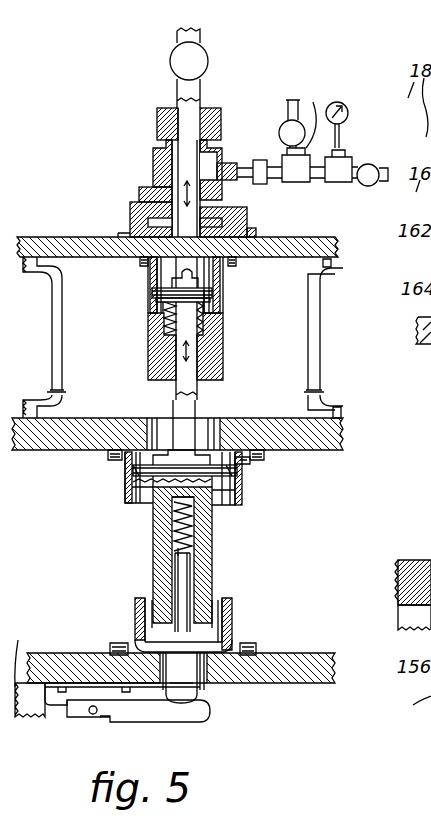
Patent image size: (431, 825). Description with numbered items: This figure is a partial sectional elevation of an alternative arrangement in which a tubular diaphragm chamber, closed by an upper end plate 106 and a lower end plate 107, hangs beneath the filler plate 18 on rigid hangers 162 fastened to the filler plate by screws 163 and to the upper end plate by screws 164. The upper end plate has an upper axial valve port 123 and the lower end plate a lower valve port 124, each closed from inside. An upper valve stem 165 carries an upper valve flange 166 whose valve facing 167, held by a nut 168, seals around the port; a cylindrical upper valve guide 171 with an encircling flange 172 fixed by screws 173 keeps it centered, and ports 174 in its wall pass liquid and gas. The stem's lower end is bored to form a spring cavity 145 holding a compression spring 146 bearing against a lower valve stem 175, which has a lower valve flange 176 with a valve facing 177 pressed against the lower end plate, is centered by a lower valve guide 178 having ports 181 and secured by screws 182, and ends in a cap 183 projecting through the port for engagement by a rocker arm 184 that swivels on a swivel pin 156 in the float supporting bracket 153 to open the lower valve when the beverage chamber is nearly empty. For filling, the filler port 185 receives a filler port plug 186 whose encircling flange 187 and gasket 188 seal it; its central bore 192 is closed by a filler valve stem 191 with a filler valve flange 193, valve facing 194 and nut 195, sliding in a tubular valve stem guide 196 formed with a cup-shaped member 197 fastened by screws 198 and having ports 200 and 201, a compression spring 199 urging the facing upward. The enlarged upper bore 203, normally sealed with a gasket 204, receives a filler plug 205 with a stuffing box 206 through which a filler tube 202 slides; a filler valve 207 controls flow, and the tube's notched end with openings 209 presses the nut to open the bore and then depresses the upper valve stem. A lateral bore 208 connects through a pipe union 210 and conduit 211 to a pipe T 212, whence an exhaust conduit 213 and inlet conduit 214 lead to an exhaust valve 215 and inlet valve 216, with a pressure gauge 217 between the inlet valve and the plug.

The filler plate 18 is at (333, 241).
The upper end plate 106 is at (338, 440).
The lower end plate 107 is at (316, 684).
The upper axial valve port 123 is at (204, 422).
The lower valve port 124 is at (205, 688).
The spring cavity 145 is at (193, 535).
The compression spring 146 is at (176, 543).
The float supporting bracket 153 is at (398, 612).
The swivel pin 156 is at (90, 719).
The rigid hangers 162 is at (316, 312).
The screws 163 is at (334, 267).
The screws 164 is at (338, 410).
The upper valve stem 165 is at (212, 525).
The upper valve flange 166 is at (155, 483).
The valve facing 167 is at (150, 476).
The nut 168 is at (160, 462).
The upper valve guide 171 is at (242, 499).
The encircling flange 172 is at (259, 455).
The screws 173 is at (118, 458).
The ports 174 is at (244, 474).
The lower valve stem 175 is at (183, 578).
The lower valve flange 176 is at (234, 678).
The valve facing 177 is at (222, 684).
The lower valve guide 178 is at (232, 601).
The ports 181 is at (140, 640).
The screws 182 is at (250, 647).
The cap 183 is at (180, 695).
The rocker arm 184 is at (120, 716).
The filler port 185 is at (237, 256).
The filler port plug 186 is at (247, 209).
The encircling flange 187 is at (258, 231).
The gasket 188 is at (119, 235).
The filler valve stem 191 is at (198, 384).
The central bore 192 is at (170, 233).
The filler valve flange 193 is at (170, 302).
The valve facing 194 is at (176, 297).
The nut 195 is at (170, 288).
The tubular valve stem guide 196 is at (218, 361).
The cup-shaped member 197 is at (226, 291).
The screws 198 is at (149, 268).
The compression spring 199 is at (220, 329).
The ports 200 is at (221, 275).
The ports 201 is at (222, 305).
The filler tube 202 is at (201, 84).
The enlarged upper bore 203 is at (148, 213).
The gasket 204 is at (141, 198).
The filler plug 205 is at (156, 148).
The stuffing box 206 is at (209, 108).
The filler valve 207 is at (203, 54).
The lateral bore 208 is at (231, 163).
The openings 209 is at (184, 272).
The pipe union 210 is at (262, 179).
The conduit 211 is at (247, 170).
The pipe T 212 is at (292, 181).
The exhaust conduit 213 is at (316, 113).
The inlet conduit 214 is at (353, 162).
The exhaust valve 215 is at (285, 125).
The inlet valve 216 is at (372, 167).
The pressure gauge 217 is at (337, 102).